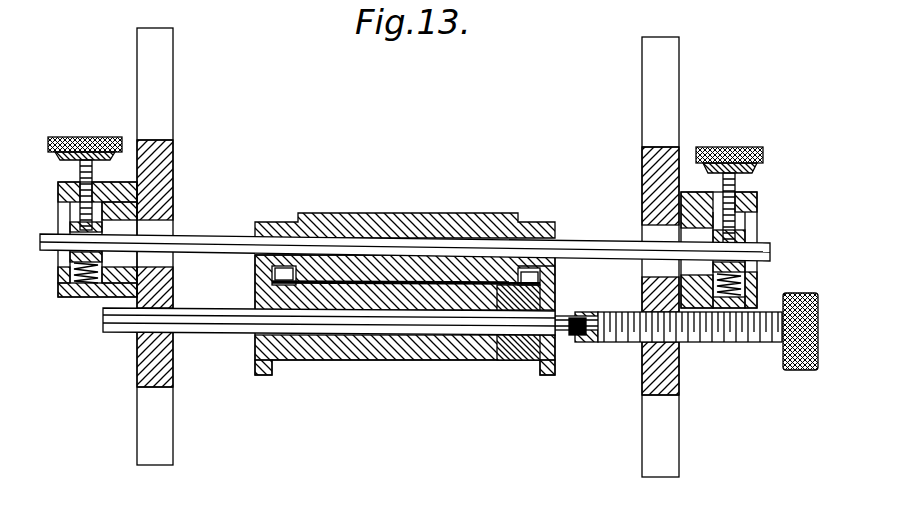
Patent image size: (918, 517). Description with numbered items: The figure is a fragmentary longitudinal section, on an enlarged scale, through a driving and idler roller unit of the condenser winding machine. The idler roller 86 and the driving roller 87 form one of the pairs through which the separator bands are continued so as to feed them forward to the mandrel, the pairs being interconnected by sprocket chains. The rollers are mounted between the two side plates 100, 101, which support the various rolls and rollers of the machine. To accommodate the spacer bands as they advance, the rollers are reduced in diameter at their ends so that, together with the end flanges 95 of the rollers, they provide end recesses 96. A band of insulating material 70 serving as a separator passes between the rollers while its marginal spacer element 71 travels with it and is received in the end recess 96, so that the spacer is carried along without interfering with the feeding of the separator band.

The side plate 100 is at (152, 436).
The side plate 101 is at (650, 436).
The idler roller 86 is at (385, 224).
The driving roller 87 is at (425, 357).
The band of insulating material 70 is at (500, 345).
The marginal spacer element 71 is at (548, 264).
The end flange 95 is at (256, 366).
The end recess 96 is at (268, 272).